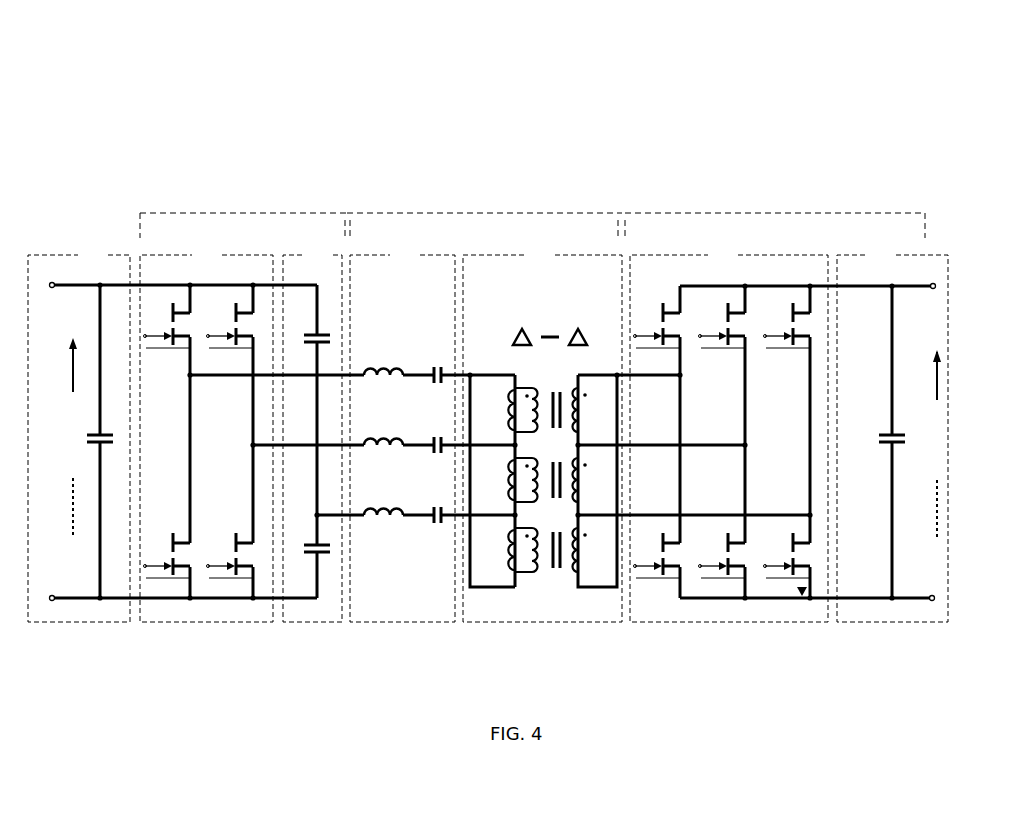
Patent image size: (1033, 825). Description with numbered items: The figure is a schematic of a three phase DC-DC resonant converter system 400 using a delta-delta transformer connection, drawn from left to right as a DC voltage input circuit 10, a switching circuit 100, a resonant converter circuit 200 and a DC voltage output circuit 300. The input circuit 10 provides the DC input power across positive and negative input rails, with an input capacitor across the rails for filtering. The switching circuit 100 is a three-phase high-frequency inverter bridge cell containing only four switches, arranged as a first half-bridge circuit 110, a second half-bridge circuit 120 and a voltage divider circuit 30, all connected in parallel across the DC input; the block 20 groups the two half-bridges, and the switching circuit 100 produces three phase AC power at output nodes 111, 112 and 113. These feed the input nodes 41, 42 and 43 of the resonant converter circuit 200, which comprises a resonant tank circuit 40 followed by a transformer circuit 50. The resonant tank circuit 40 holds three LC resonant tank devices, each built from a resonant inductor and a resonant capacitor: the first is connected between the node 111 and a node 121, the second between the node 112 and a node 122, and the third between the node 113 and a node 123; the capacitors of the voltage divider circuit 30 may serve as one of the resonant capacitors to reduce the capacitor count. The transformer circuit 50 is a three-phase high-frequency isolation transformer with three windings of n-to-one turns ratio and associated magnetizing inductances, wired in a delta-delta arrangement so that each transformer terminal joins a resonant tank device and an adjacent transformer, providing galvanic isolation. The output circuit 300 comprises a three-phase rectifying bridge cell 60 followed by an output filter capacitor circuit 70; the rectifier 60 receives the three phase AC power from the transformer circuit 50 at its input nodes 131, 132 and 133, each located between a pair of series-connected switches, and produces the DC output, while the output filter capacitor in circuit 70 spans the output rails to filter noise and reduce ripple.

The three phase resonant converter system 400 is at (553, 116).
The switching circuit 100 is at (275, 213).
The resonant converter circuit 200 is at (507, 213).
The DC voltage output circuit 300 is at (802, 213).
The DC voltage input circuit 10 is at (79, 435).
The primary switching bridge 20 is at (195, 465).
The voltage divider circuit 30 is at (312, 435).
The resonant tank circuit 40 is at (406, 435).
The transformer circuit 50 is at (515, 435).
The three-phase rectifying bridge cell 60 is at (703, 435).
The output filter capacitor circuit 70 is at (892, 435).
The input node 41 is at (354, 373).
The input node 42 is at (351, 444).
The input node 43 is at (352, 514).
The first half-bridge circuit 110 is at (177, 617).
The second half-bridge circuit 120 is at (237, 617).
The output node 111 is at (261, 373).
The output node 112 is at (294, 446).
The output node 113 is at (326, 511).
The node 121 is at (460, 365).
The node 122 is at (457, 447).
The node 123 is at (462, 517).
The rectifier circuit input node 131 is at (632, 378).
The rectifier circuit input node 132 is at (631, 443).
The rectifier circuit input node 133 is at (631, 513).